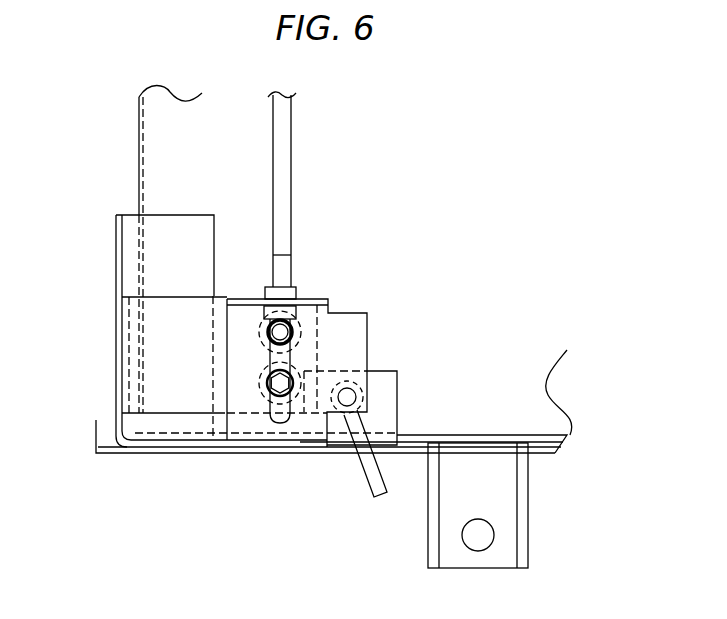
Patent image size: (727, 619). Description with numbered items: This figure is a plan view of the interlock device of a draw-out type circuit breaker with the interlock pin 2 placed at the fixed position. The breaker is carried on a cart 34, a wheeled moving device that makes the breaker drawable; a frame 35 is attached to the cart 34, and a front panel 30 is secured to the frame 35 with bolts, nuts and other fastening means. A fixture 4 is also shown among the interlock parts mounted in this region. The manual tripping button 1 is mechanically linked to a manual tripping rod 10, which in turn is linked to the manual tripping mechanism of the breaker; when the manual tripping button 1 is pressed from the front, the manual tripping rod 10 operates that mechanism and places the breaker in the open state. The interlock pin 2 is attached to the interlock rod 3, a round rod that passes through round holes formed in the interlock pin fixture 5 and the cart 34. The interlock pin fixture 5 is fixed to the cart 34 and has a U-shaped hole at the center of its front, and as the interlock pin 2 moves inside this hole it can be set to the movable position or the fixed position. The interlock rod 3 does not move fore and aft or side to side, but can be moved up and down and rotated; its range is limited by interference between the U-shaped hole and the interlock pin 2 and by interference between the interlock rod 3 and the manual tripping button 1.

The manual tripping button 1 is at (343, 316).
The interlock pin 2 is at (368, 474).
The interlock rod 3 is at (351, 393).
The fixture 4 is at (153, 354).
The interlock pin fixture 5 is at (387, 418).
The manual tripping rod 10 is at (287, 218).
The front panel 30 is at (148, 455).
The cart 34 is at (156, 161).
The frame 35 is at (118, 243).